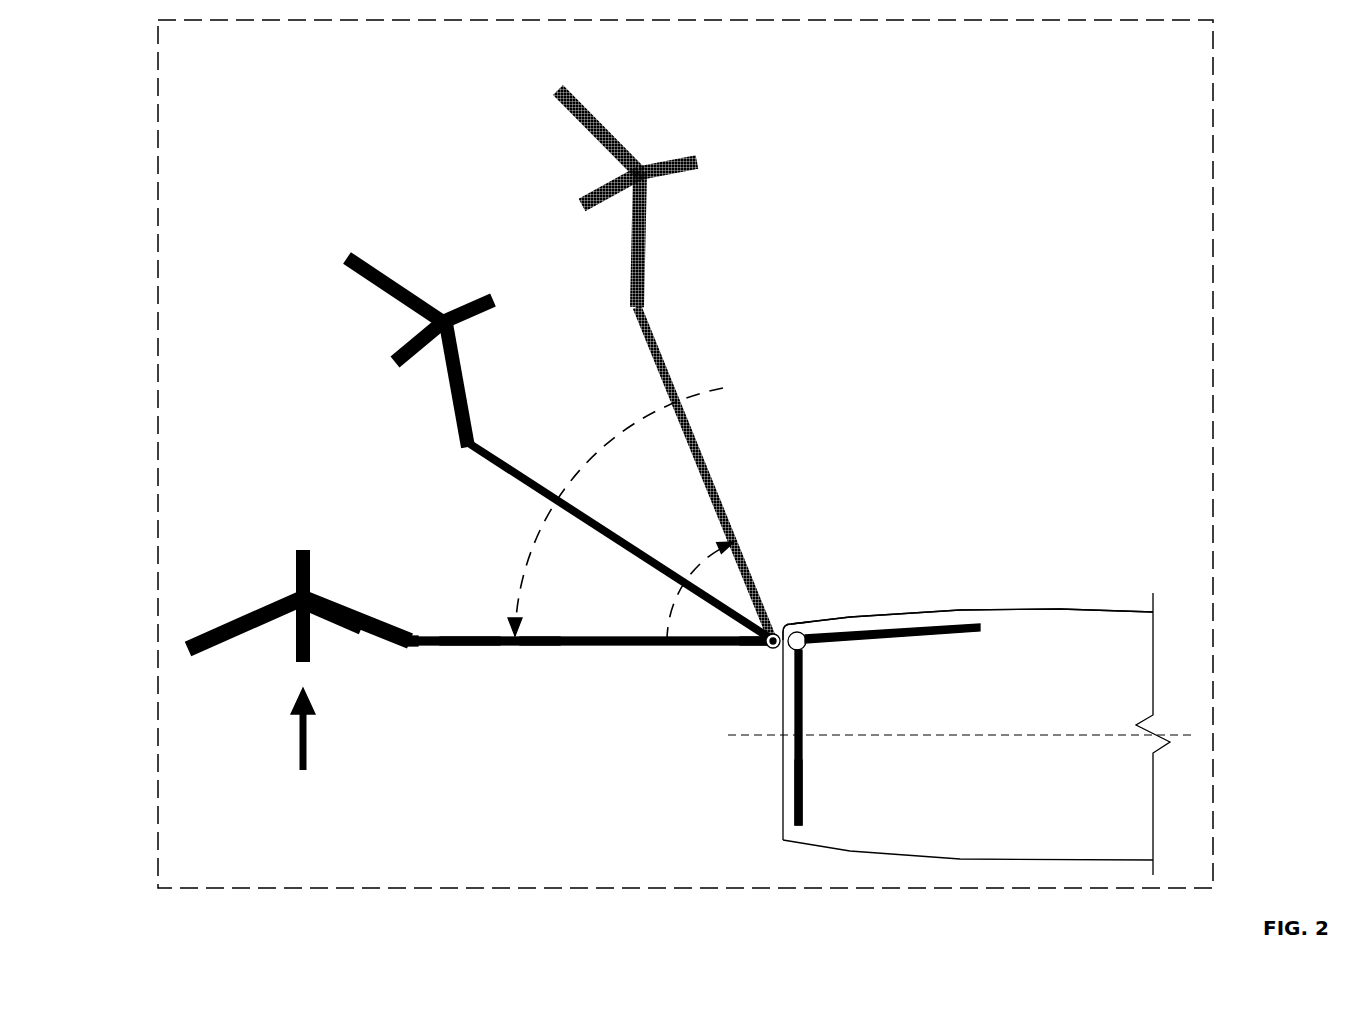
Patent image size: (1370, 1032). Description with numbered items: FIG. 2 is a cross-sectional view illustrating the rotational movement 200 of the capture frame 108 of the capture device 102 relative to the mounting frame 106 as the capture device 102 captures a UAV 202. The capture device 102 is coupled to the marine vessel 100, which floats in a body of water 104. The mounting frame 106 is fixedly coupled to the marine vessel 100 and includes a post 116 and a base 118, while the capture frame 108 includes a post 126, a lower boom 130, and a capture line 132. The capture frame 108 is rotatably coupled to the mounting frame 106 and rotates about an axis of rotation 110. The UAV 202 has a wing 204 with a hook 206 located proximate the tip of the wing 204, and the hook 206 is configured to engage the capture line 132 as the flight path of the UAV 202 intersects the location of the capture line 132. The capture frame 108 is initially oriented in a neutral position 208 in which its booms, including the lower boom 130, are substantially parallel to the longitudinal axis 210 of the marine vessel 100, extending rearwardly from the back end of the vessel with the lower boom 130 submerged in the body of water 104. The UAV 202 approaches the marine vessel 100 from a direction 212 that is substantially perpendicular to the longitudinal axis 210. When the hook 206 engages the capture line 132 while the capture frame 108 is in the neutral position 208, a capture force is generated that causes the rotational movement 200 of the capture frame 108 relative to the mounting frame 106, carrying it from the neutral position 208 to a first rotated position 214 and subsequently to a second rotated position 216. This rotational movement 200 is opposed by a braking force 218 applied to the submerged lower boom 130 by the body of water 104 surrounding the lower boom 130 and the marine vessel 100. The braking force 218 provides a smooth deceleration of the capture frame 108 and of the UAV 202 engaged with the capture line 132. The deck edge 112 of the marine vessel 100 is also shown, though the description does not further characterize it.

The marine vessel 100 is at (976, 734).
The capture device 102 is at (790, 603).
The body of water 104 is at (571, 791).
The mounting frame 106 is at (803, 703).
The capture frame 108 is at (612, 647).
The axis of rotation 110 is at (768, 645).
The deck 112 is at (1046, 613).
The post 116 is at (807, 648).
The base 118 is at (968, 634).
The post 126 is at (774, 652).
The lower boom 130 is at (540, 647).
The capture line 132 is at (410, 636).
The rotational movement 200 is at (675, 608).
The UAV 202 is at (303, 548).
The wing 204 is at (362, 628).
The hook 206 is at (410, 650).
The neutral position 208 is at (462, 637).
The longitudinal axis 210 is at (750, 736).
The direction 212 is at (310, 742).
The first rotated position 214 is at (498, 448).
The second rotated position 216 is at (658, 323).
The braking force 218 is at (525, 553).